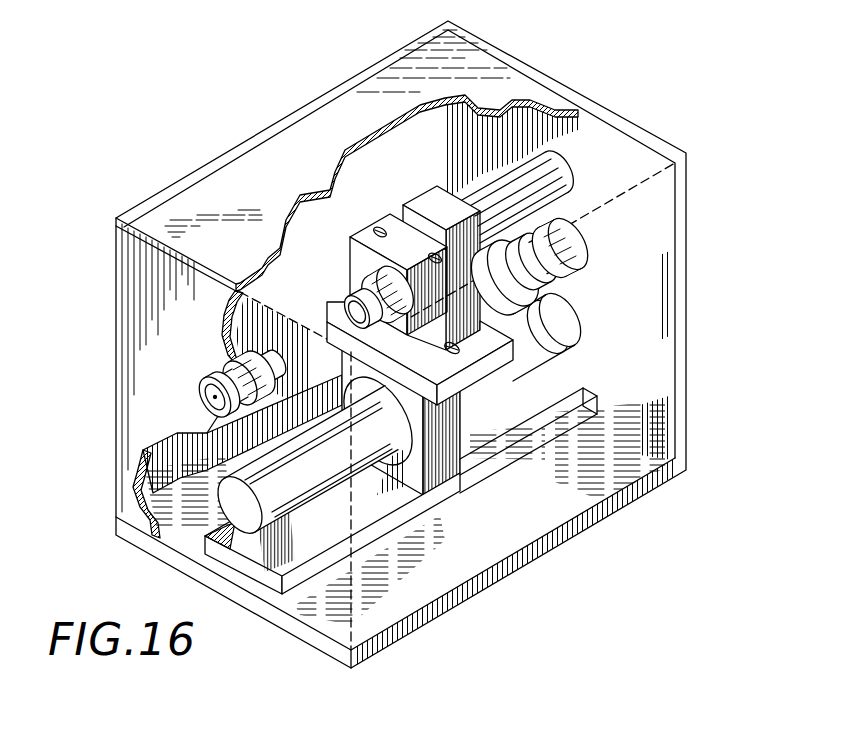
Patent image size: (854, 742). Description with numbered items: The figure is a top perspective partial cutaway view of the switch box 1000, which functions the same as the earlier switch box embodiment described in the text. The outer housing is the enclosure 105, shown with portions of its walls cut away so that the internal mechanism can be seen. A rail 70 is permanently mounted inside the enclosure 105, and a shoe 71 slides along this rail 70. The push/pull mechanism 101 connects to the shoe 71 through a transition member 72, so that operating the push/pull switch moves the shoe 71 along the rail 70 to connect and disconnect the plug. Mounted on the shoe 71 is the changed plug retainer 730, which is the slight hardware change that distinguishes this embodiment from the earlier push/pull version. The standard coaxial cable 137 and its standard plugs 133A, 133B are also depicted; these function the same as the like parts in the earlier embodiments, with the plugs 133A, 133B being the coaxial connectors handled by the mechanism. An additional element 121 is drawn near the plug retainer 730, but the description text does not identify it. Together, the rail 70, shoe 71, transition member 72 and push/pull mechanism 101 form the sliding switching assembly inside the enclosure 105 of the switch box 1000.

The switch box 1000 is at (578, 65).
The enclosure 105 is at (290, 146).
The push/pull mechanism 101 is at (580, 178).
The transition member 72 is at (430, 201).
The plug retainer 730 is at (352, 232).
The fiber ferrule 121 is at (367, 302).
The standard plug 133A is at (205, 378).
The standard plug 133B is at (580, 262).
The standard coaxial cable 137 is at (530, 353).
The rail 70 is at (533, 355).
The shoe 71 is at (457, 445).